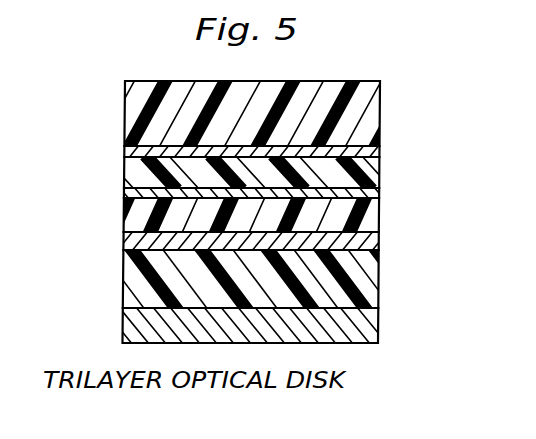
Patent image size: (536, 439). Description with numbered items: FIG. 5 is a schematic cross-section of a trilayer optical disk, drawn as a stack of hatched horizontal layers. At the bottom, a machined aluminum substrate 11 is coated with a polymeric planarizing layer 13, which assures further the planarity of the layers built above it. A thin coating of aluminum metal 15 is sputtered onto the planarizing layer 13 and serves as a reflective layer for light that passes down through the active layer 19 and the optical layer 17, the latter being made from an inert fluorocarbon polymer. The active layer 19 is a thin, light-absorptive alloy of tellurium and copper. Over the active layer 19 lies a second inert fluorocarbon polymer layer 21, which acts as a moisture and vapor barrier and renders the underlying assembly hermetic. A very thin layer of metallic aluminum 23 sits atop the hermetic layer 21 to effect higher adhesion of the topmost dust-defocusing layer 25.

The machined aluminum substrate 11 is at (415, 333).
The polymeric planarizing layer 13 is at (422, 269).
The aluminum layer 15 is at (424, 233).
The optical layer 17 is at (424, 212).
The active layer 19 is at (431, 186).
The second inert fluorocarbon polymer layer 21 is at (448, 164).
The metallic aluminum layer 23 is at (284, 142).
The dust-defocusing layer 25 is at (276, 113).